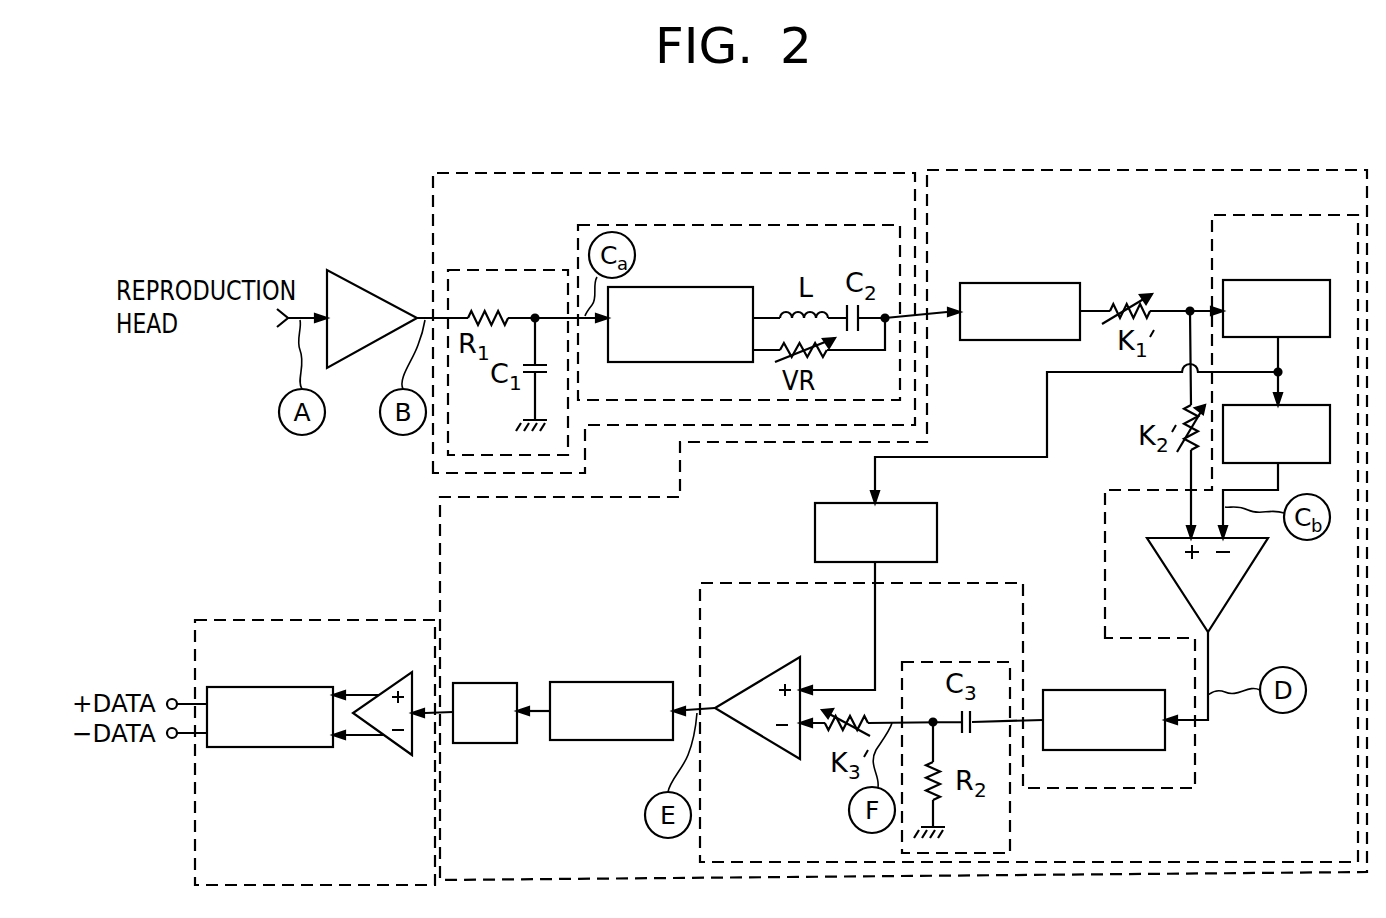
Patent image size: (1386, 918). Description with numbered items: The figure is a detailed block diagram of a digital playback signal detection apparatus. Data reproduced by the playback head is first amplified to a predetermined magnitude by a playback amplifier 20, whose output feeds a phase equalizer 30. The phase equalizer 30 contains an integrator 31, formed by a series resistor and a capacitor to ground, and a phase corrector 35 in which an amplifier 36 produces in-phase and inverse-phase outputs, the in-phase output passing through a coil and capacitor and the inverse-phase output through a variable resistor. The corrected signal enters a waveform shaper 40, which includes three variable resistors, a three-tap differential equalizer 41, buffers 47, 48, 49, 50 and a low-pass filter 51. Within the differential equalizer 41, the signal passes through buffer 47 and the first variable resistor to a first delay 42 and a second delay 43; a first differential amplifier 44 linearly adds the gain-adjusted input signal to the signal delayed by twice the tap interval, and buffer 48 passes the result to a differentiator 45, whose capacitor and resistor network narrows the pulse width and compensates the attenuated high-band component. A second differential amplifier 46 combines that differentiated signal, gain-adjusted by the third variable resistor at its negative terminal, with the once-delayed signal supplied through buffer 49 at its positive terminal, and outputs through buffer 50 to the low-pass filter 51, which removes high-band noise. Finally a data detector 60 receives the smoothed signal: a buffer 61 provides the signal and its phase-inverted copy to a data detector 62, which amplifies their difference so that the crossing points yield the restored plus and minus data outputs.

The playback amplifier 20 is at (371, 290).
The phase equalizer 30 is at (685, 173).
The integrator 31 is at (505, 270).
The phase corrector 35 is at (800, 225).
The amplifier 36 is at (710, 287).
The waveform shaper 40 is at (1247, 170).
The three-tap differential equalizer 41 is at (720, 583).
The first delay 42 is at (1290, 280).
The second delay 43 is at (1290, 405).
The first differential amplifier 44 is at (1237, 590).
The differentiator 45 is at (962, 662).
The second differential amplifier 46 is at (752, 683).
The buffer 47 is at (1033, 283).
The buffer 48 is at (1118, 690).
The buffer 49 is at (937, 535).
The buffer 50 is at (617, 682).
The low-pass filter 51 is at (497, 683).
The data detector 60 is at (305, 620).
The buffer 61 is at (392, 686).
The data detector 62 is at (248, 687).